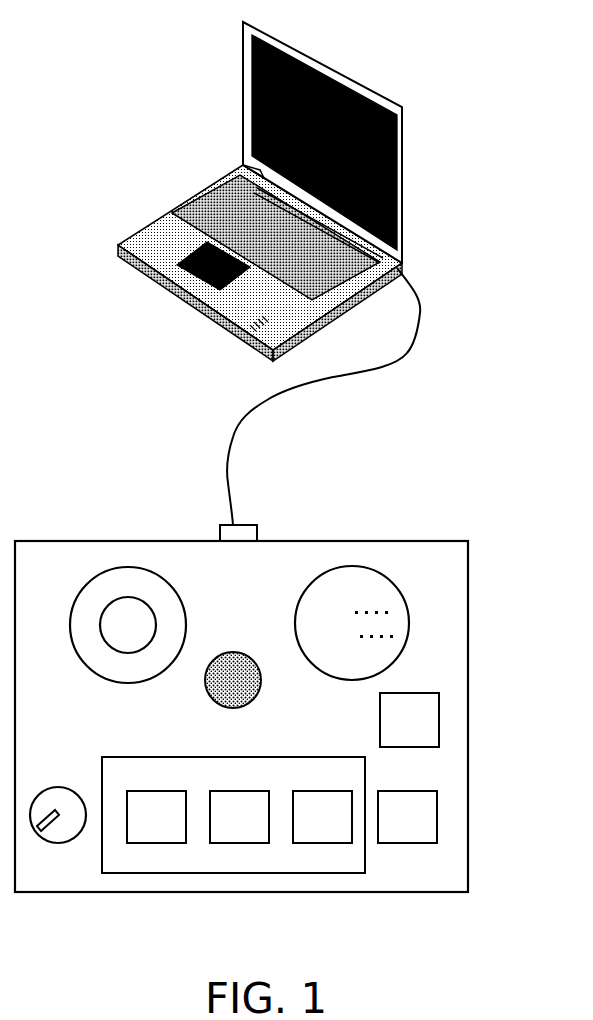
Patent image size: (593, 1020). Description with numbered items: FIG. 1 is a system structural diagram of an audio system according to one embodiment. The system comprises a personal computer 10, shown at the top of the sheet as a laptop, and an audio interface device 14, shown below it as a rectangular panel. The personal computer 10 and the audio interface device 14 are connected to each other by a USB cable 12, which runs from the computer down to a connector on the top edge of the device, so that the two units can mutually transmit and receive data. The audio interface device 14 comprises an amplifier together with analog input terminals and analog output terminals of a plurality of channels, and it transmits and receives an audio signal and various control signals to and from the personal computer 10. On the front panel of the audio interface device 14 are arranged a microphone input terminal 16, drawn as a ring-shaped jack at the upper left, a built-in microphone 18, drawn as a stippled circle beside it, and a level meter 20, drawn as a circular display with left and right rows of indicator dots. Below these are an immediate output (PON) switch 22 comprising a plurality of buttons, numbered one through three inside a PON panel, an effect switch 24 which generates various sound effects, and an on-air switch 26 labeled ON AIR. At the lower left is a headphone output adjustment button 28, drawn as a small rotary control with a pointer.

The personal computer 10 is at (407, 213).
The USB cable 12 is at (407, 353).
The audio interface device 14 is at (470, 693).
The microphone input terminal 16 is at (177, 588).
The built-in microphone 18 is at (240, 652).
The level meter 20 is at (395, 580).
The immediate output (PON) switch 22 is at (280, 756).
The effect switch 24 is at (402, 845).
The on-air switch 26 is at (412, 692).
The headphone output adjustment button 28 is at (52, 792).